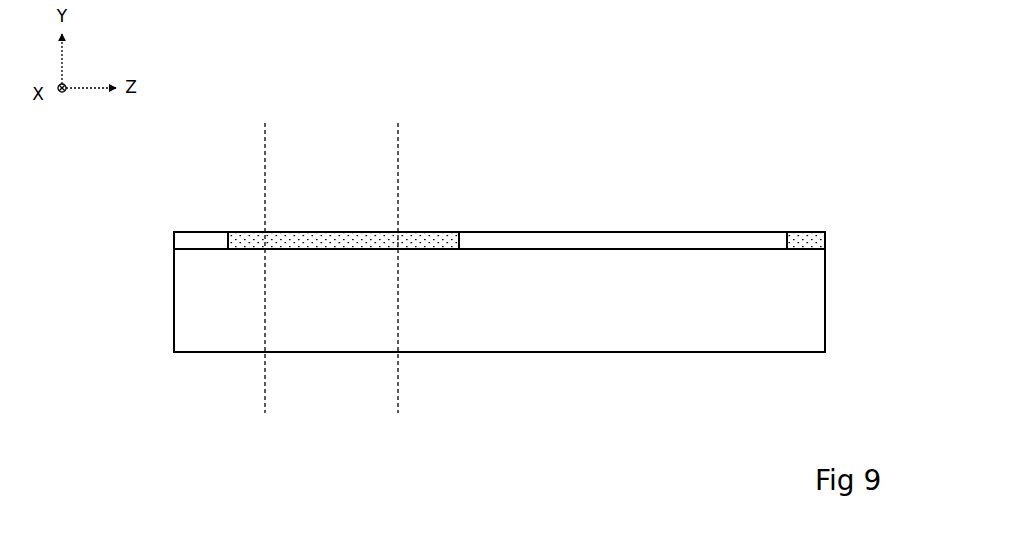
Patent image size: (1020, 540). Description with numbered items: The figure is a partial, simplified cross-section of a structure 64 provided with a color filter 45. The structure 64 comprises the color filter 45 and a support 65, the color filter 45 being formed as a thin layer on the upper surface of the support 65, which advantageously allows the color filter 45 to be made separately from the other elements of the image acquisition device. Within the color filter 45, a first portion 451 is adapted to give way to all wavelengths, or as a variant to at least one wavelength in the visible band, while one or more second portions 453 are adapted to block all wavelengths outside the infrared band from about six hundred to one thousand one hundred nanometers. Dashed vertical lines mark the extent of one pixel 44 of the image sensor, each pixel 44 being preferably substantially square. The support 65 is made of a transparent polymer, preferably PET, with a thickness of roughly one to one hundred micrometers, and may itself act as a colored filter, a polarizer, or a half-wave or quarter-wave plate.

The pixel 44 is at (339, 143).
The color filter 45 is at (153, 240).
The first portion 451 is at (697, 242).
The second portion 453 is at (438, 224).
The structure 64 is at (834, 165).
The support 65 is at (166, 297).